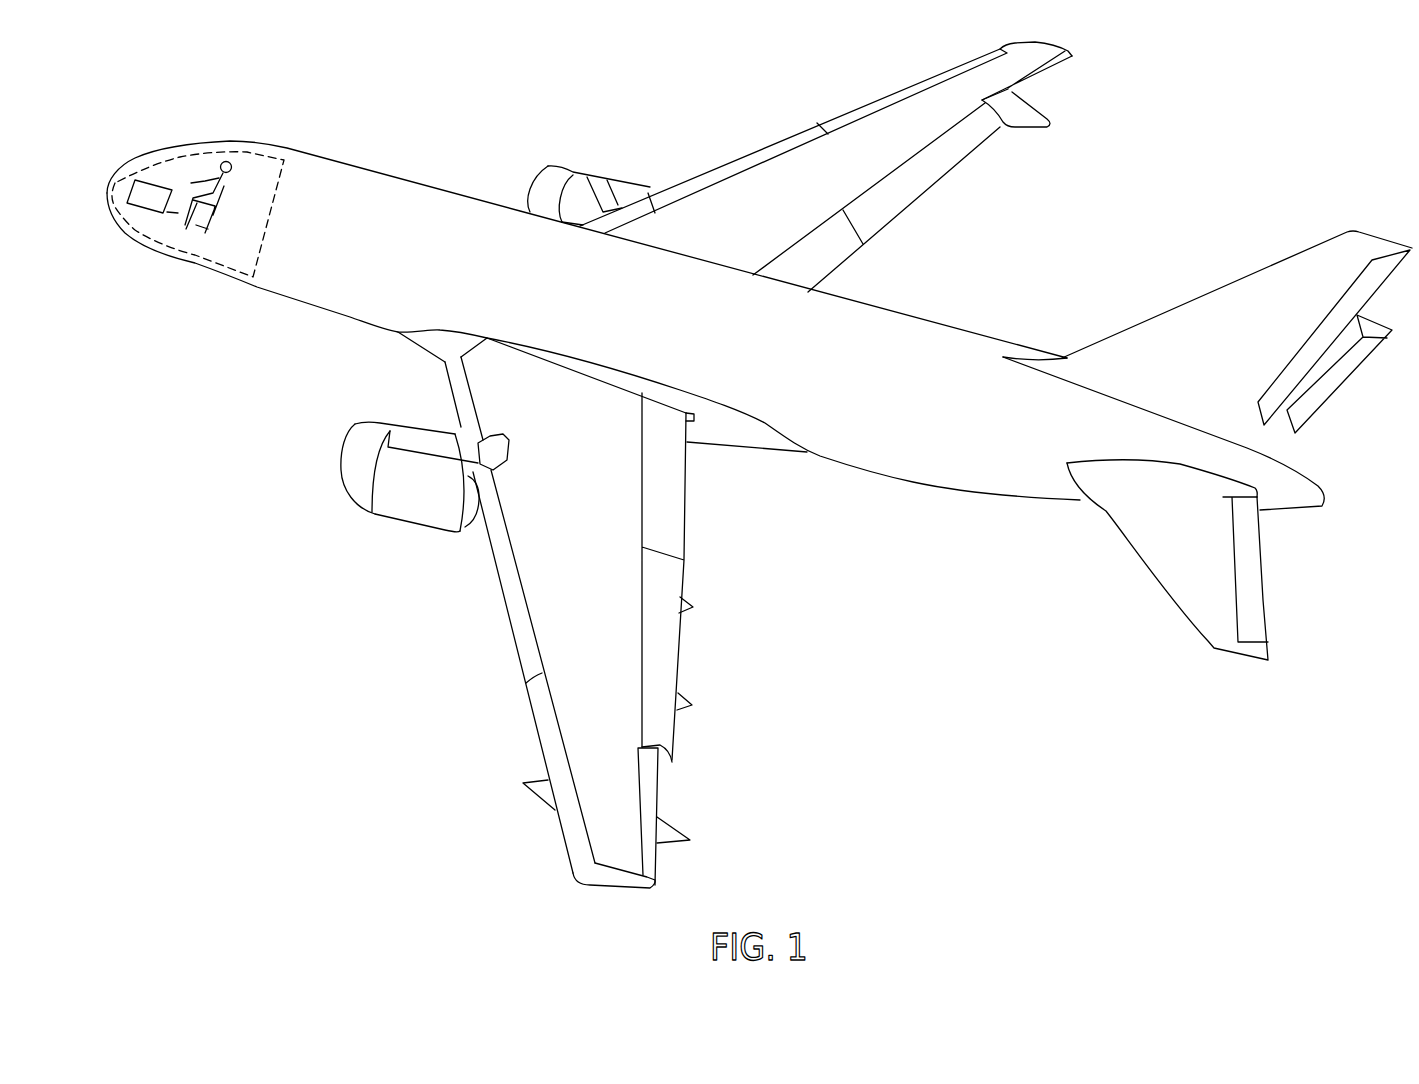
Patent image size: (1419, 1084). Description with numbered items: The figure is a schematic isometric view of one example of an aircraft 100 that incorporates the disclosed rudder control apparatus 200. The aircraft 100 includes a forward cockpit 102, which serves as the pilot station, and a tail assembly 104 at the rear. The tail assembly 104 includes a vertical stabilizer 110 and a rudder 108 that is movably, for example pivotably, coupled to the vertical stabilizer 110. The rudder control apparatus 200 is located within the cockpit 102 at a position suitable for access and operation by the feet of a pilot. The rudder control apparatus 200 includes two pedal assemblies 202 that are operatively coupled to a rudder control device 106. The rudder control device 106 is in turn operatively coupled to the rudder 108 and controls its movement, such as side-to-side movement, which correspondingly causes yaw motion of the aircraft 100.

The aircraft 100 is at (751, 465).
The cockpit 102 is at (715, 279).
The tail assembly 104 is at (1237, 424).
The rudder control device 106 is at (134, 184).
The rudder 108 is at (1380, 296).
The vertical stabilizer 110 is at (1251, 273).
The rudder control apparatus 200 is at (187, 226).
The pedal assemblies 202 is at (177, 198).